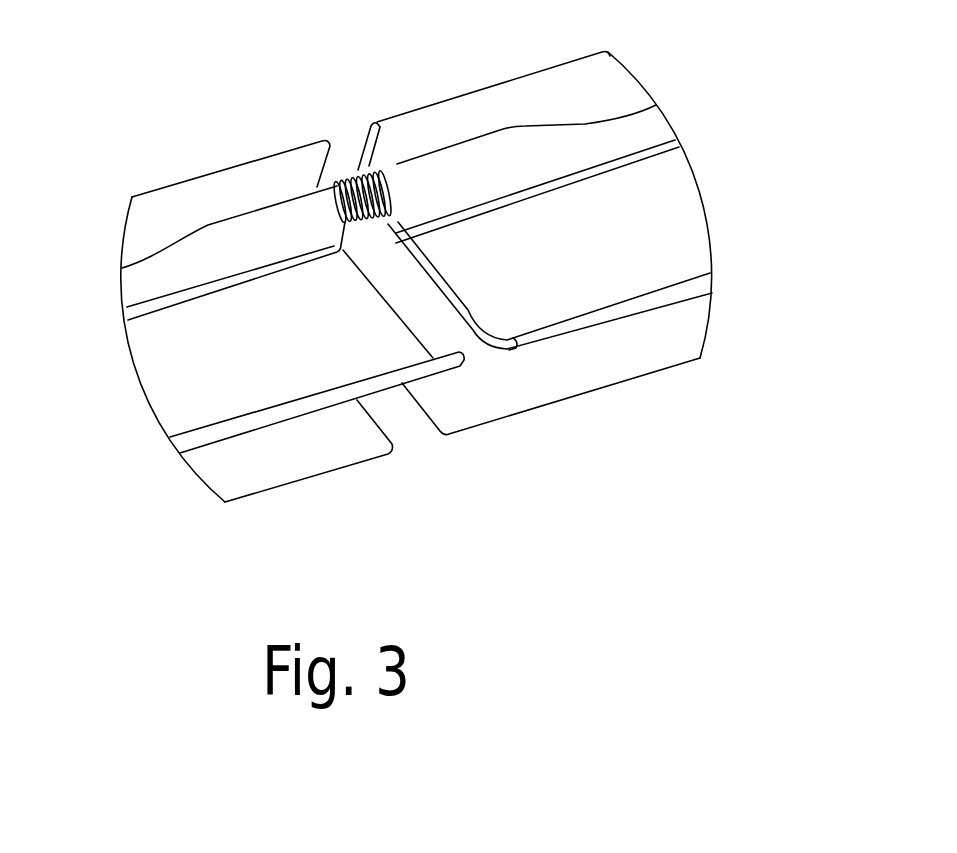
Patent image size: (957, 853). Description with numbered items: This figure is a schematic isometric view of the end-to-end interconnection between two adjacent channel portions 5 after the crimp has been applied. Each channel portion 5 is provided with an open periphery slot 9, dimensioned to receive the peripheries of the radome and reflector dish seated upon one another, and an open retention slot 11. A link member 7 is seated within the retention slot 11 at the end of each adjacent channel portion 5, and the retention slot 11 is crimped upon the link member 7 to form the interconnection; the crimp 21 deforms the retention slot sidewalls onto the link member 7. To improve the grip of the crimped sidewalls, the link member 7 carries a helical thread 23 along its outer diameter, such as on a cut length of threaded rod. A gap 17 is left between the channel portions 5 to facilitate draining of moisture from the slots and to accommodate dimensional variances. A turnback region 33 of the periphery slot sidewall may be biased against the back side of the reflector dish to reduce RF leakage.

The channel portion 5 is at (660, 192).
The link member 7 is at (358, 173).
The periphery slot 9 is at (562, 358).
The retention slot 11 is at (160, 230).
The gap 17 is at (407, 430).
The crimp 21 is at (313, 217).
The helical thread 23 is at (380, 172).
The turnback region 33 is at (627, 307).